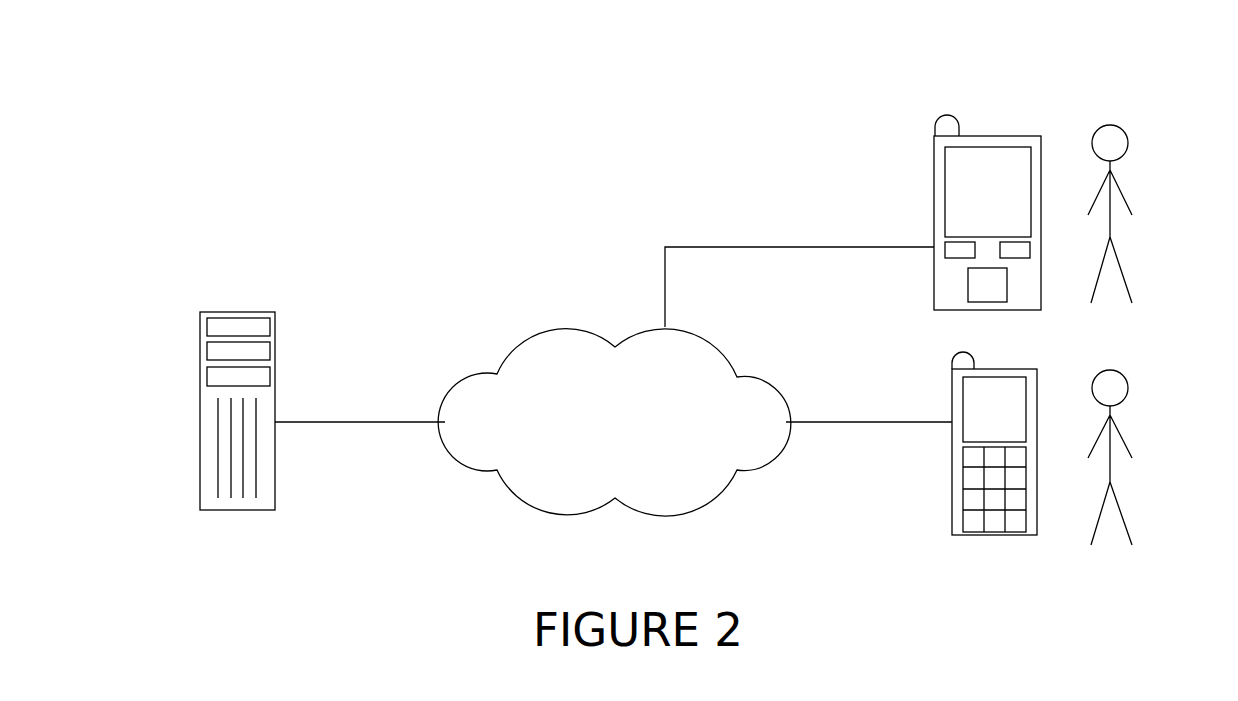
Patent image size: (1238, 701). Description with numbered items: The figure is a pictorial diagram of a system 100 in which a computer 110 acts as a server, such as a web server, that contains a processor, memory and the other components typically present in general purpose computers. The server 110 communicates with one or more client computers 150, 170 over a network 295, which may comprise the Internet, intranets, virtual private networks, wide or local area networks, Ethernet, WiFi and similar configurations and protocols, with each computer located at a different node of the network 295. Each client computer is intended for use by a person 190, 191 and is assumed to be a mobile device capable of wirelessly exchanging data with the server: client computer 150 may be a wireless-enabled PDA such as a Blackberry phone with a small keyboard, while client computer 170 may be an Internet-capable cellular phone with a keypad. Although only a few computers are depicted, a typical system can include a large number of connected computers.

The system 100 is at (628, 55).
The computer 110 is at (200, 398).
The network 295 is at (566, 327).
The client computer 150 is at (934, 200).
The client computer 170 is at (952, 405).
The person 190 is at (1110, 215).
The person 191 is at (1110, 458).